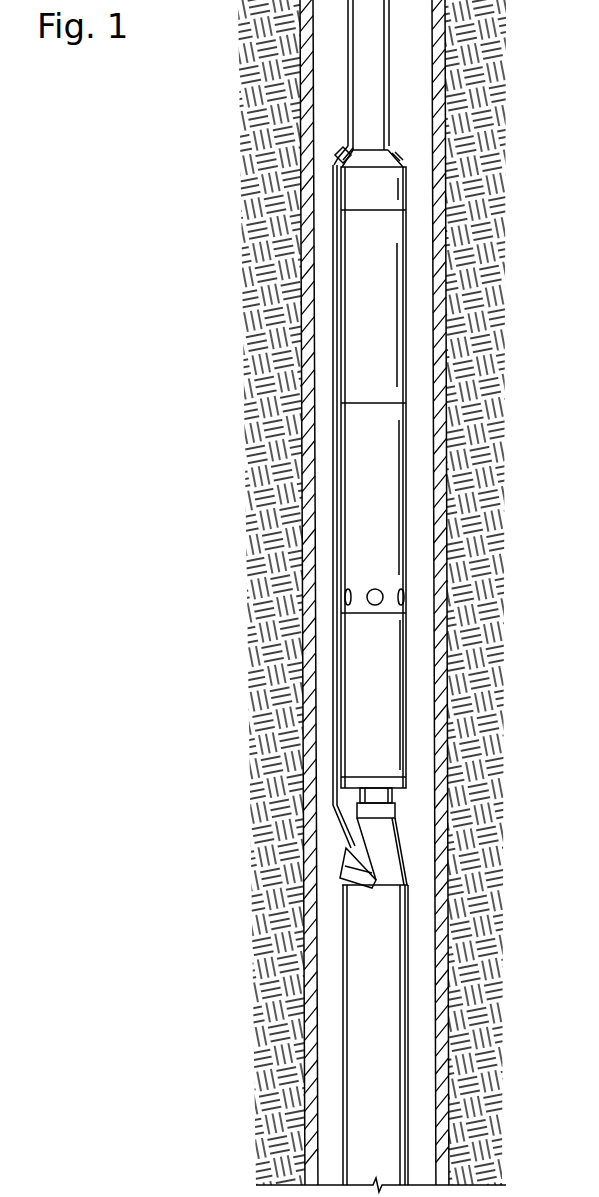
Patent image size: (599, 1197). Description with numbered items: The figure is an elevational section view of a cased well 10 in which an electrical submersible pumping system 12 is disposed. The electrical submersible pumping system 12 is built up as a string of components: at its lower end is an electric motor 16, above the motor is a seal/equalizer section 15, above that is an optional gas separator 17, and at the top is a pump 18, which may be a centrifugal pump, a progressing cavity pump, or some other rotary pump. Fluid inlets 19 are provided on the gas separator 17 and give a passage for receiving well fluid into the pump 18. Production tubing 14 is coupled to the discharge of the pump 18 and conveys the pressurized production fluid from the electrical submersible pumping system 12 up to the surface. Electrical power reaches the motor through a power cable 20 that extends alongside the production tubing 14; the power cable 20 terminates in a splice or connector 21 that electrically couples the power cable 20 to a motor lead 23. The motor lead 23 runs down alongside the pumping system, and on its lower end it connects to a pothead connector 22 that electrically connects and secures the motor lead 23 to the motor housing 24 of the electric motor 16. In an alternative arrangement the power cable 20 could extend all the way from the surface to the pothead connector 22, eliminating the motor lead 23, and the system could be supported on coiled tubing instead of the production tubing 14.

The cased well 10 is at (437, 482).
The electrical submersible pumping system 12 is at (413, 715).
The production tubing 14 is at (373, 118).
The seal/equalizer section 15 is at (385, 758).
The electric motor 16 is at (395, 964).
The gas separator 17 is at (383, 450).
The pump 18 is at (392, 235).
The fluid inlets 19 is at (380, 577).
The power cable 20 is at (350, 143).
The splice or connector 21 is at (333, 157).
The pothead connector 22 is at (353, 865).
The motor lead 23 is at (338, 325).
The motor housing 24 is at (370, 905).